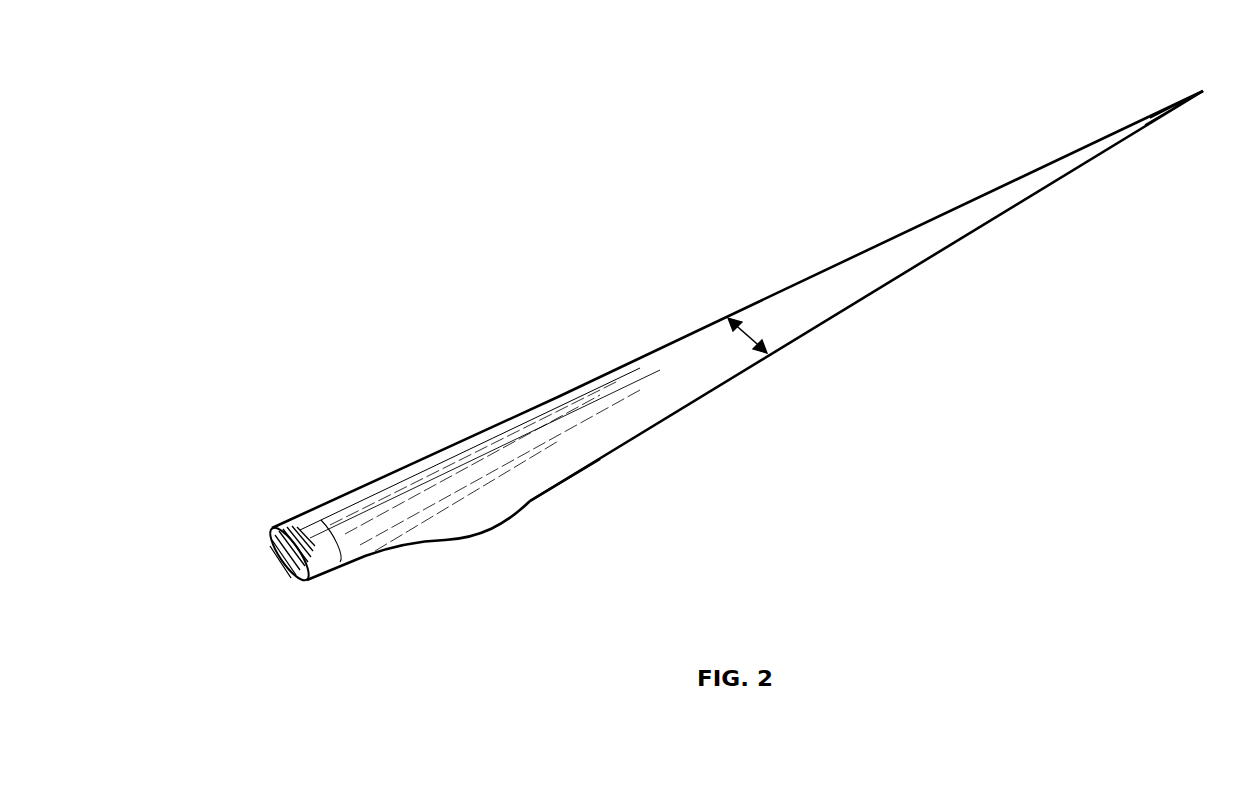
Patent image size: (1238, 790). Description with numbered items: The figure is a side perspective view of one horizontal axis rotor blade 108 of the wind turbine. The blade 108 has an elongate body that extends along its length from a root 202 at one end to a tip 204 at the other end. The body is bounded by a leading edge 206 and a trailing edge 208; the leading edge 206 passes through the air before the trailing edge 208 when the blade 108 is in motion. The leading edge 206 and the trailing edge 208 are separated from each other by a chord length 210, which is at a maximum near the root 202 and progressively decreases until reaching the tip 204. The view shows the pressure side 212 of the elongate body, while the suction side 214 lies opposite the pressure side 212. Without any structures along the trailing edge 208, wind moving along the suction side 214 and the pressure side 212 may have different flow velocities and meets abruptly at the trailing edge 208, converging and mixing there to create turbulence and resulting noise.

The rotor blade 108 is at (172, 88).
The root 202 is at (372, 503).
The tip 204 is at (1163, 112).
The leading edge 206 is at (623, 364).
The trailing edge 208 is at (540, 505).
The chord length 210 is at (745, 326).
The pressure side 212 is at (643, 419).
The suction side 214 is at (570, 477).